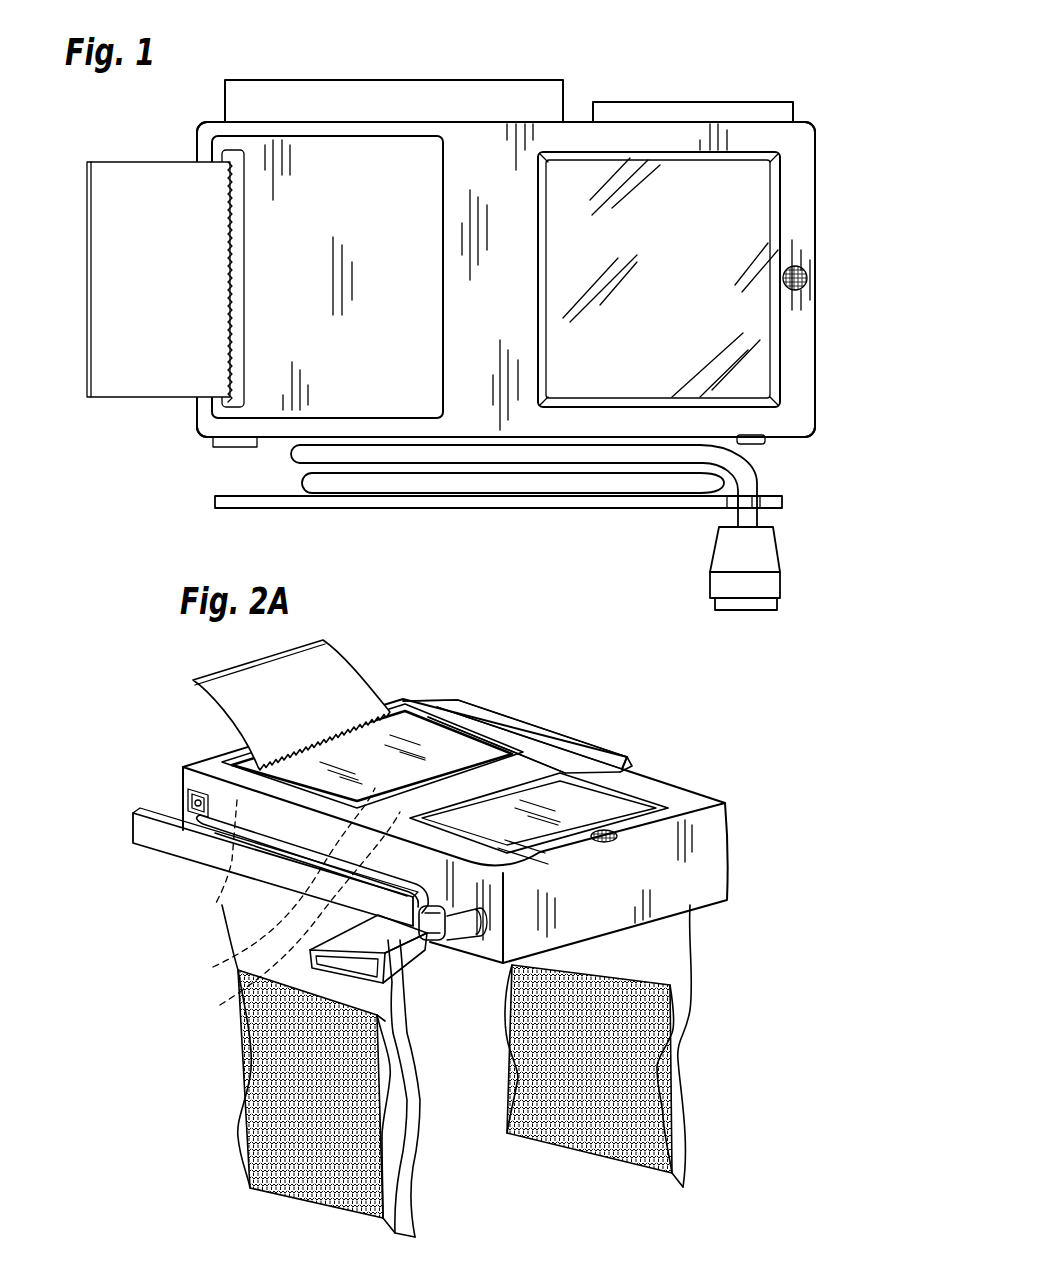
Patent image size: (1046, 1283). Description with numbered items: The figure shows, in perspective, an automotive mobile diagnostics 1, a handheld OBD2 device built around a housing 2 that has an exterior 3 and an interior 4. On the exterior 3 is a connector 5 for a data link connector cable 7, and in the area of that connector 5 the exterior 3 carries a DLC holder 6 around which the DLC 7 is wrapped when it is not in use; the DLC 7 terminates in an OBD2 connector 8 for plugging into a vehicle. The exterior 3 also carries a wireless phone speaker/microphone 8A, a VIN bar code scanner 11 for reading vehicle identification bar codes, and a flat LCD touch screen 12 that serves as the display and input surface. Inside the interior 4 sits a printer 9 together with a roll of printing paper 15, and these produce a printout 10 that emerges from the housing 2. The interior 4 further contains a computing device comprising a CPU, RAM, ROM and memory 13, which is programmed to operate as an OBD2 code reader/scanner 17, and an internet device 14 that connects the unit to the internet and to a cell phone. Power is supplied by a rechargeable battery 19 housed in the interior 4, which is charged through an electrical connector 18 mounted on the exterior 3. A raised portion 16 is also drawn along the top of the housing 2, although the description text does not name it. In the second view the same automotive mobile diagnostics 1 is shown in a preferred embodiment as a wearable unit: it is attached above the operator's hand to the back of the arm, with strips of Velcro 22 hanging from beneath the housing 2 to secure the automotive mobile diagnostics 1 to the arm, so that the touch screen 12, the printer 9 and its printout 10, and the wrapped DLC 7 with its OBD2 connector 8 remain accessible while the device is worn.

In FIG. 1, the automotive mobile diagnostics 1 is at (805, 80).
In FIG. 2A, the automotive mobile diagnostics 1 is at (150, 705).
In FIG. 1, the housing 2 is at (197, 135).
In FIG. 2A, the housing 2 is at (180, 768).
In FIG. 1, the exterior 3 is at (200, 417).
In FIG. 2A, the exterior 3 is at (625, 778).
In FIG. 1, the interior 4 is at (463, 420).
In FIG. 2A, the interior 4 is at (470, 705).
In FIG. 1, the connector 5 is at (770, 440).
In FIG. 2A, the connector 5 is at (483, 945).
In FIG. 1, the DLC holder 6 is at (557, 527).
In FIG. 2A, the DLC holder 6 is at (138, 865).
In FIG. 1, the data link connector cable 7 is at (622, 482).
In FIG. 2A, the data link connector cable 7 is at (178, 860).
In FIG. 1, the OBD2 connector 8 is at (762, 612).
In FIG. 2A, the OBD2 connector 8 is at (378, 962).
In FIG. 1, the wireless phone speaker/microphone 8A is at (806, 272).
In FIG. 2A, the wireless phone speaker/microphone 8A is at (617, 839).
In FIG. 1, the printer 9 is at (390, 412).
In FIG. 2A, the printer 9 is at (398, 765).
In FIG. 1, the printout 10 is at (120, 365).
In FIG. 2A, the printout 10 is at (335, 662).
In FIG. 1, the VIN bar code scanner 11 is at (715, 85).
In FIG. 2A, the VIN bar code scanner 11 is at (722, 795).
In FIG. 1, the flat LCD touch screen 12 is at (735, 238).
In FIG. 2A, the flat LCD touch screen 12 is at (605, 815).
In FIG. 1, the computing device 13 is at (462, 200).
In FIG. 2A, the computing device 13 is at (522, 722).
In FIG. 1, the internet device 14 is at (490, 200).
In FIG. 2A, the internet device 14 is at (580, 733).
In FIG. 1, the roll of printing paper 15 is at (460, 300).
In FIG. 2A, the roll of printing paper 15 is at (285, 820).
In FIG. 1, the raised ridge 16 is at (458, 70).
In FIG. 2A, the raised ridge 16 is at (540, 727).
In FIG. 1, the OBD2 code reader/scanner 17 is at (480, 287).
In FIG. 2A, the OBD2 code reader/scanner 17 is at (215, 967).
In FIG. 1, the electrical connector 18 is at (222, 447).
In FIG. 1, the rechargeable battery 19 is at (470, 222).
In FIG. 2A, the rechargeable battery 19 is at (222, 1005).
In FIG. 2A, the Velcro 22 is at (235, 1103).